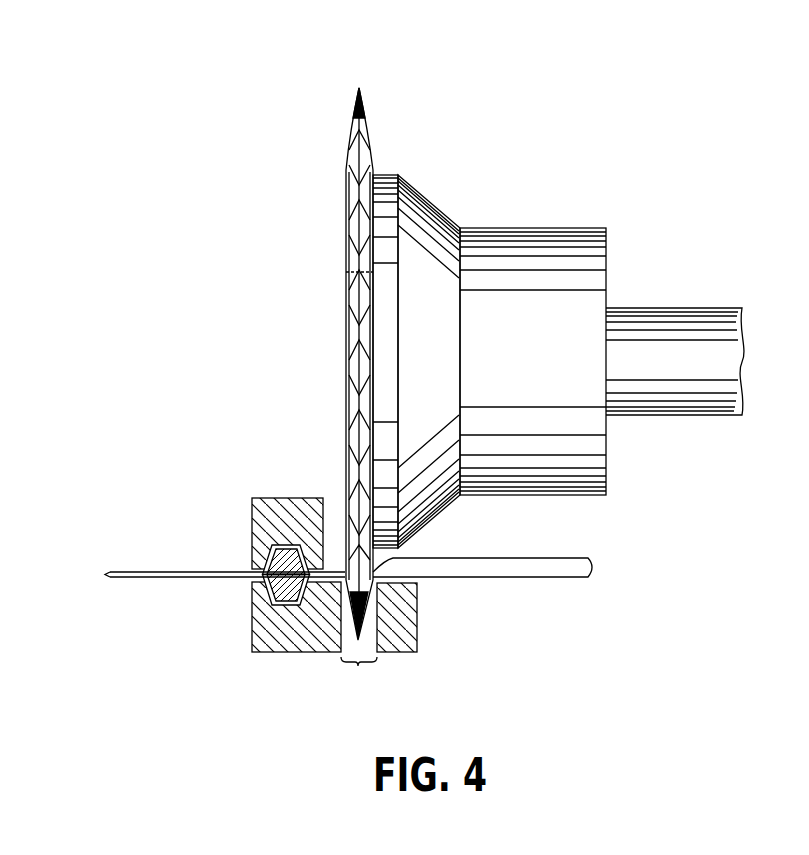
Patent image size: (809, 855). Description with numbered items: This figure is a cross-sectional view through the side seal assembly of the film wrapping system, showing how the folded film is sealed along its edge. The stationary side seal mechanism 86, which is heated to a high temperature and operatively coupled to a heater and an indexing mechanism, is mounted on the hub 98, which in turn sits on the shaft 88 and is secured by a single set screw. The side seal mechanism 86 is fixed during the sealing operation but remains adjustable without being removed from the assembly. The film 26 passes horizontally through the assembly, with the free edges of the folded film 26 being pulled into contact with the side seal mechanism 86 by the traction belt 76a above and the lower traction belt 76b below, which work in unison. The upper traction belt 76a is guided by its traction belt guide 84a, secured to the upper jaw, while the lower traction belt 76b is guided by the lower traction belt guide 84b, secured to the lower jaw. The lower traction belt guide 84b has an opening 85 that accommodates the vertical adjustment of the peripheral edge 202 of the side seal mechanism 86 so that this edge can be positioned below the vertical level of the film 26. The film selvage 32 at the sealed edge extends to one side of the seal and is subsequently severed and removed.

The peripheral edge 202 is at (359, 88).
The side seal mechanism 86 is at (346, 262).
The hub 98 is at (505, 228).
The shaft 88 is at (677, 308).
The traction belt guide 84a is at (280, 497).
The lower traction belt guide 84b is at (280, 653).
The traction belt 76a is at (267, 561).
The lower traction belt 76b is at (264, 587).
The film 26 is at (148, 572).
The film selvage 32 is at (557, 579).
The opening 85 is at (358, 666).